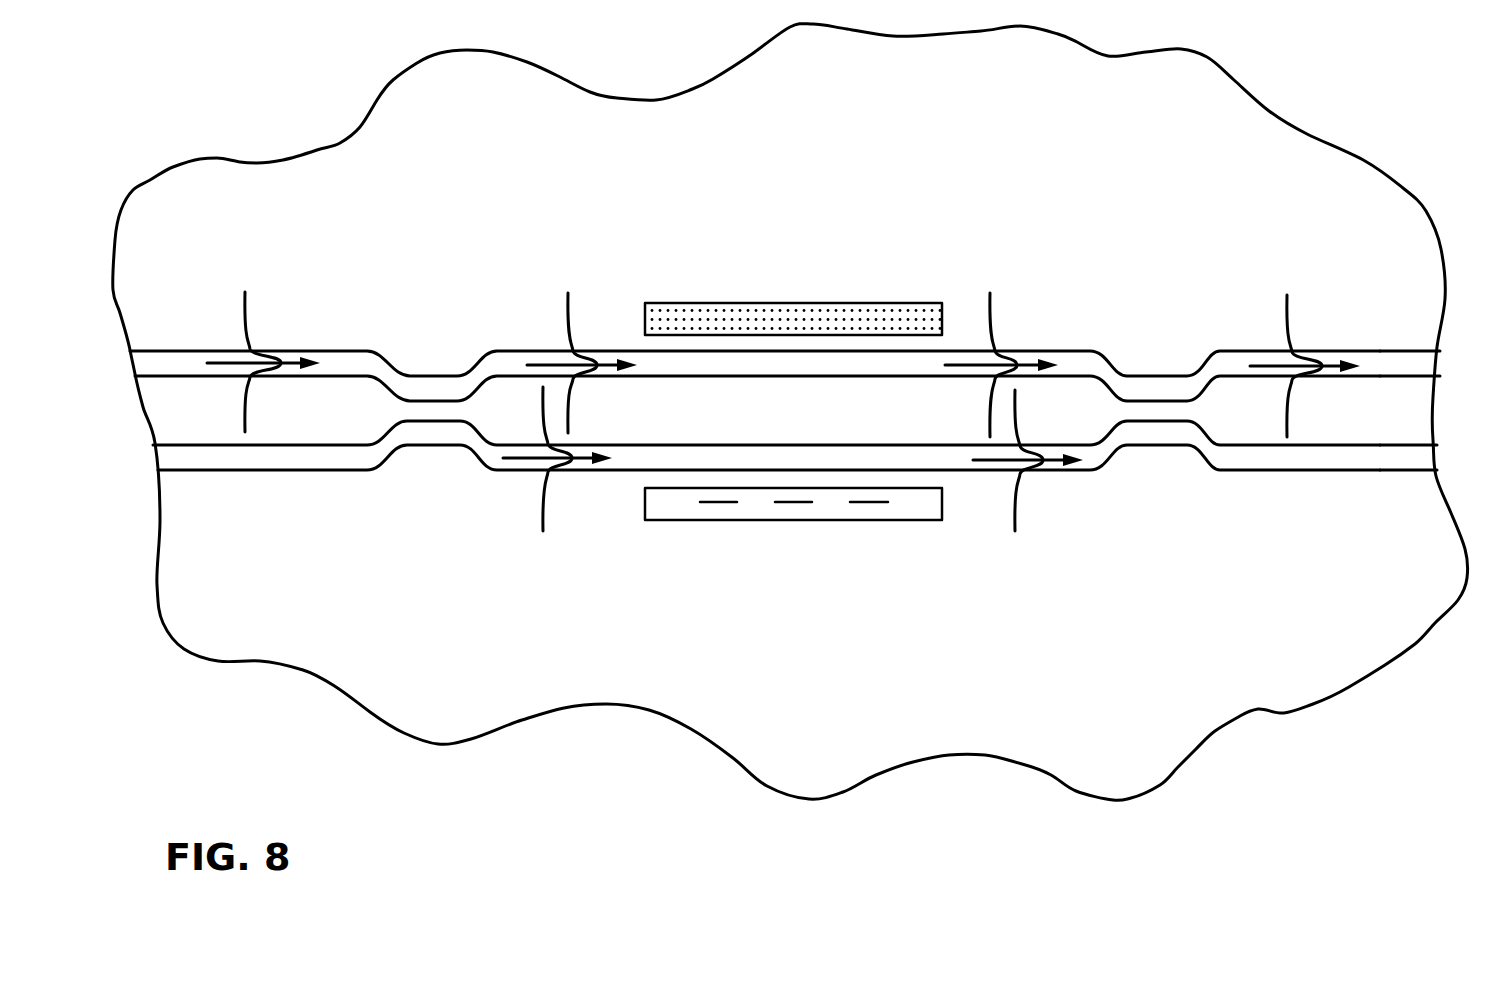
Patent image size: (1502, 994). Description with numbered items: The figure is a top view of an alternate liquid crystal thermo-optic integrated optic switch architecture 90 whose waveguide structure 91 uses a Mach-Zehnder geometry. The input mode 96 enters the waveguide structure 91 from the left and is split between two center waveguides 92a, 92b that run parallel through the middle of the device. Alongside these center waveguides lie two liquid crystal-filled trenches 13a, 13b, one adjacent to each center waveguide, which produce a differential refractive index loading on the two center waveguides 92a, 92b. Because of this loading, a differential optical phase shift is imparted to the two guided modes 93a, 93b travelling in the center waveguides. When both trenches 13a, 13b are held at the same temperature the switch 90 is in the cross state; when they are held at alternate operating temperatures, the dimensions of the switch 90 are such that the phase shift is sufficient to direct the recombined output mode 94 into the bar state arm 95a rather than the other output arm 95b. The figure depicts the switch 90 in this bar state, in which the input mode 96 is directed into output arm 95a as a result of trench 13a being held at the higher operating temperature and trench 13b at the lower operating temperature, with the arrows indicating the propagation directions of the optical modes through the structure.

The switch architecture 90 is at (672, 200).
The waveguide structure 91 is at (345, 362).
The center waveguide 92a is at (660, 367).
The center waveguide 92b is at (640, 457).
The guided mode 93a is at (997, 310).
The guided mode 93b is at (1011, 511).
The recombined output mode 94 is at (1282, 308).
The bar state arm 95a is at (1405, 367).
The output arm 95b is at (1339, 462).
The input mode 96 is at (238, 312).
The liquid crystal-filled trench 13a is at (750, 303).
The liquid crystal-filled trench 13b is at (797, 520).